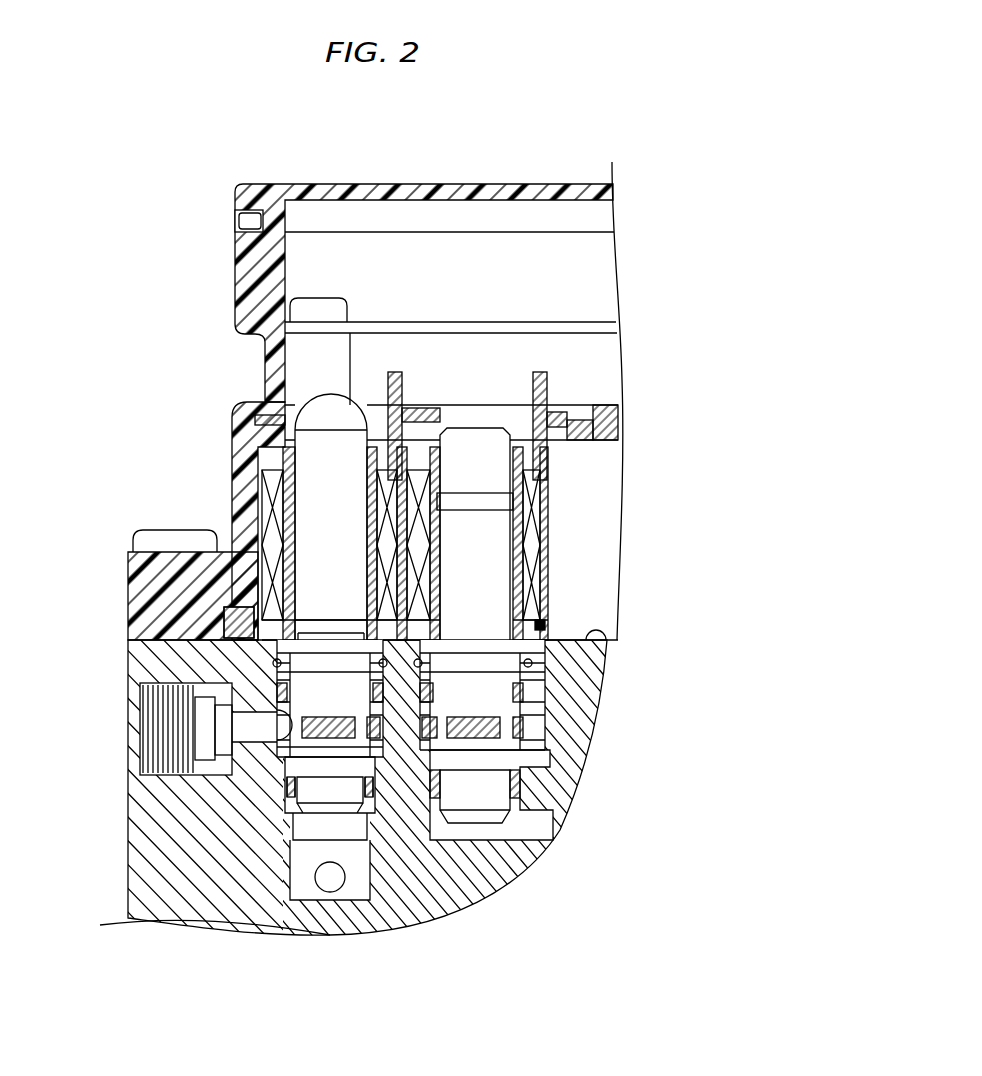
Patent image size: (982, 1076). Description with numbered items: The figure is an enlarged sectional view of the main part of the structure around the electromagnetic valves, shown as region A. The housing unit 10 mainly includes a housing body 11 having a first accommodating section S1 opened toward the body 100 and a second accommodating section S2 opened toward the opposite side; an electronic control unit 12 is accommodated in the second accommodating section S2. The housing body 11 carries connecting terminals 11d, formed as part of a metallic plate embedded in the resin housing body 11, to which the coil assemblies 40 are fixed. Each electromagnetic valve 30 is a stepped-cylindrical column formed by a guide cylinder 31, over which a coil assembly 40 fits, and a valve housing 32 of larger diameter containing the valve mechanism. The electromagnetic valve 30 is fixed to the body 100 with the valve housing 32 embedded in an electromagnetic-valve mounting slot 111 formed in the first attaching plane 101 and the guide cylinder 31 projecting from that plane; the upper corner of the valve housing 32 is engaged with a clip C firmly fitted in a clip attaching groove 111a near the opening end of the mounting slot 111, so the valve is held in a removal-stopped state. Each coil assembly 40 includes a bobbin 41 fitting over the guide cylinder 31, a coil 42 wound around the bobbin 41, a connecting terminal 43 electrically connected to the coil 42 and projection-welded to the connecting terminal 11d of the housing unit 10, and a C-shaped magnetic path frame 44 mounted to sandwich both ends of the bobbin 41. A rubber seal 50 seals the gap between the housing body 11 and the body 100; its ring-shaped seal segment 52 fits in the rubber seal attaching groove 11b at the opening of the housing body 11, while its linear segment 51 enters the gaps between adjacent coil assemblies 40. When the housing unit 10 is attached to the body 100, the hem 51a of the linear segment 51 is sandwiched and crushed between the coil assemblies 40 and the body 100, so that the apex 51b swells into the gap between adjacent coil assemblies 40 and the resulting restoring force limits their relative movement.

The solenoid valve portion A is at (200, 176).
The housing unit 10 is at (482, 178).
The housing body 11 is at (240, 458).
The rubber seal attaching groove 11b is at (236, 578).
The connecting terminal 11d is at (548, 384).
The electronic control unit 12 is at (602, 322).
The second accommodating section S2 is at (605, 268).
The first accommodating section S1 is at (605, 555).
The electromagnetic valve 30 is at (308, 390).
The guide cylinder 31 is at (310, 497).
The valve housing 32 is at (563, 793).
The coil assembly 40 is at (262, 456).
The bobbin 41 is at (524, 499).
The coil 42 is at (538, 536).
The connecting terminal 43 is at (540, 437).
The magnetic path frame 44 is at (546, 590).
The rubber seal 50 is at (182, 532).
The linear segment 51 is at (385, 985).
The hem 51a is at (358, 620).
The convex apex 51b is at (352, 615).
The ring-shaped seal segment 52 is at (240, 636).
The body 100 is at (118, 846).
The first attaching plane 101 is at (605, 638).
The electromagnetic-valve mounting slot 111 is at (497, 698).
The clip attaching groove 111a is at (290, 690).
The clip C is at (393, 603).